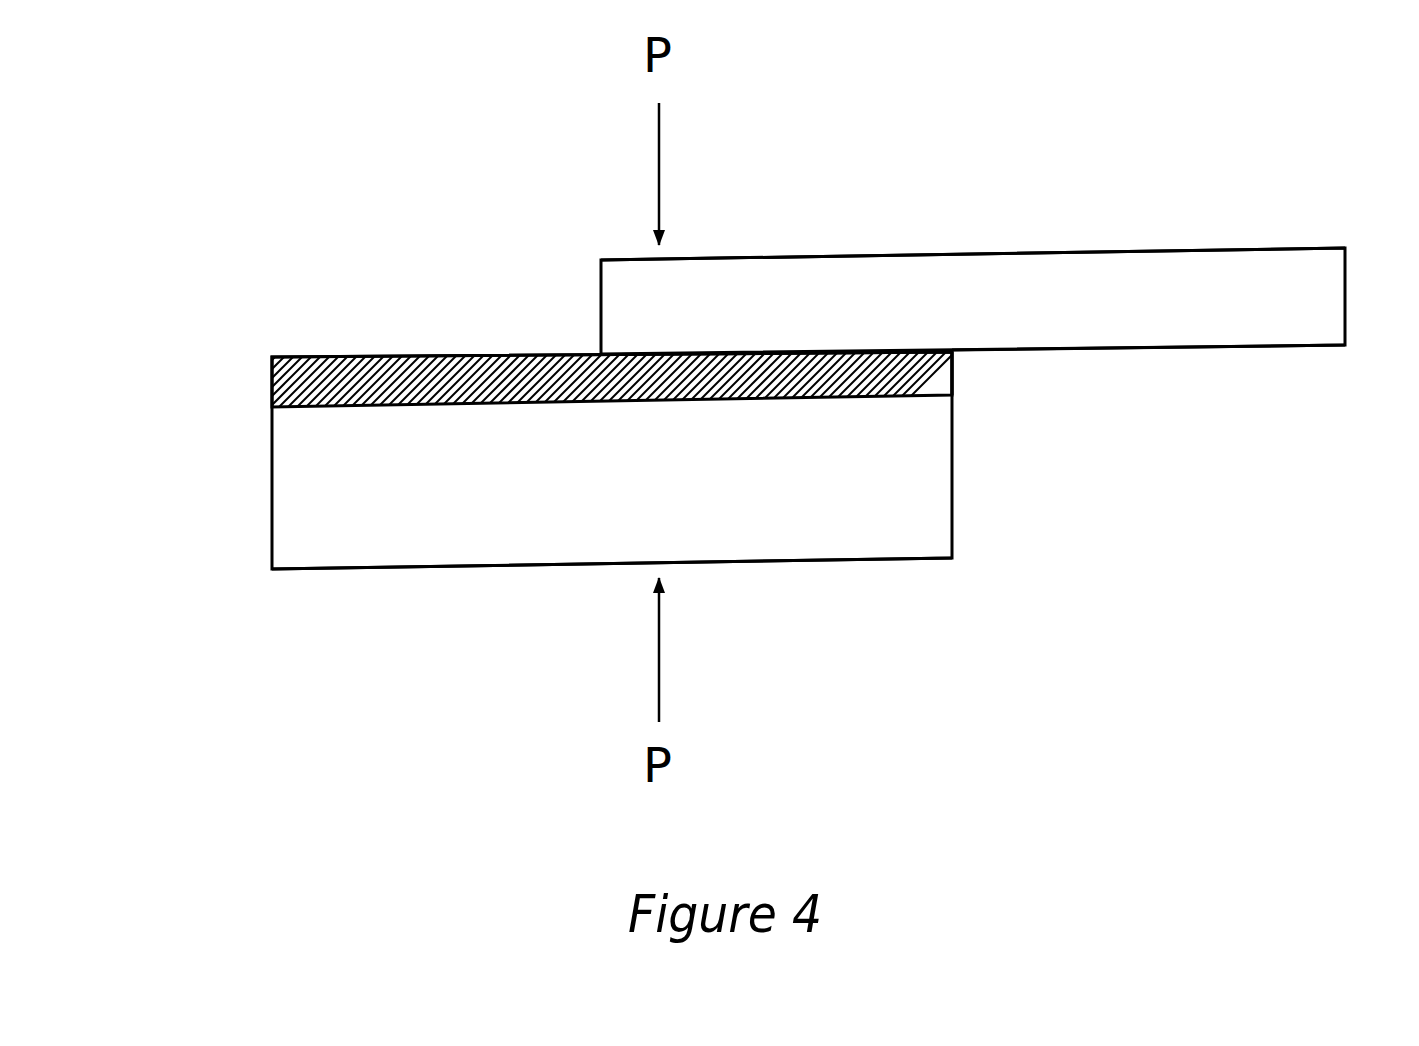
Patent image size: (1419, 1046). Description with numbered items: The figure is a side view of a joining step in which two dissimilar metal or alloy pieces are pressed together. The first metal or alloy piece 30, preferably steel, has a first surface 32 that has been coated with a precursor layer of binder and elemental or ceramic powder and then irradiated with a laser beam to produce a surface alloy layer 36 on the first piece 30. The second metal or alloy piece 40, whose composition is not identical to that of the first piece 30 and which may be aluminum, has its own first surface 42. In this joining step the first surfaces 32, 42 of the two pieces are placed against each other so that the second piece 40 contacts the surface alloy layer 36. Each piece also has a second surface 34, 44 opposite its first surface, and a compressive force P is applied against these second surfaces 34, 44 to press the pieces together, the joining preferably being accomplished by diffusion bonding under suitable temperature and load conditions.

The first metal or alloy piece 30 is at (612, 460).
The first surface of the first piece 32 is at (350, 347).
The second surface of the first piece 34 is at (348, 573).
The surface alloy layer 36 is at (927, 375).
The second metal or alloy piece 40 is at (973, 301).
The first surface of the second piece 42 is at (1273, 349).
The second surface of the second piece 44 is at (1272, 250).